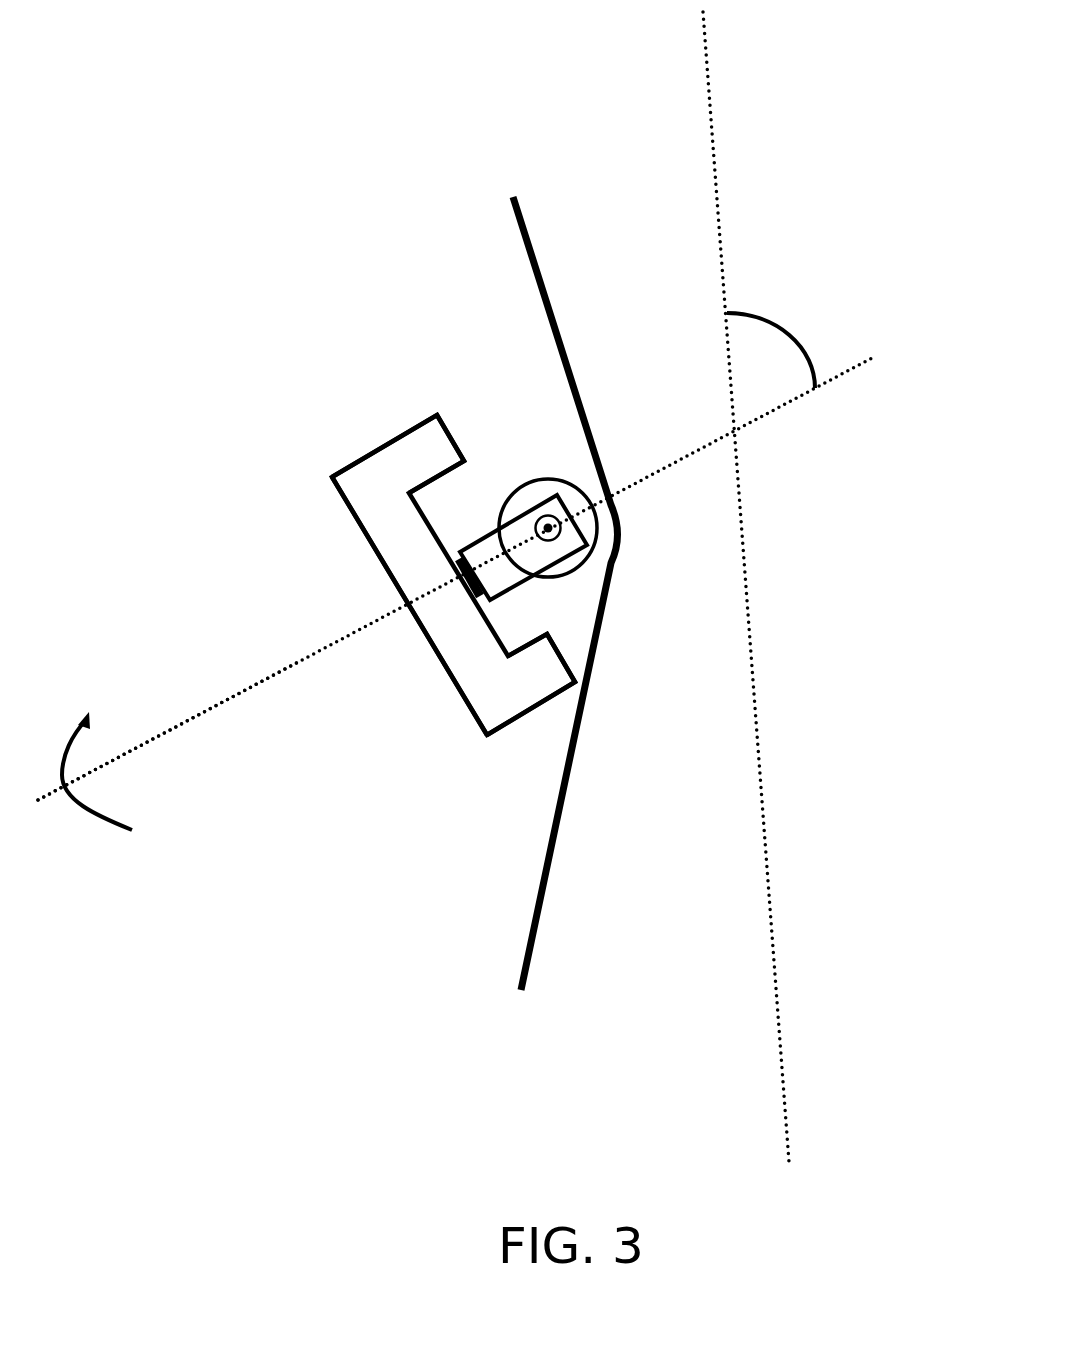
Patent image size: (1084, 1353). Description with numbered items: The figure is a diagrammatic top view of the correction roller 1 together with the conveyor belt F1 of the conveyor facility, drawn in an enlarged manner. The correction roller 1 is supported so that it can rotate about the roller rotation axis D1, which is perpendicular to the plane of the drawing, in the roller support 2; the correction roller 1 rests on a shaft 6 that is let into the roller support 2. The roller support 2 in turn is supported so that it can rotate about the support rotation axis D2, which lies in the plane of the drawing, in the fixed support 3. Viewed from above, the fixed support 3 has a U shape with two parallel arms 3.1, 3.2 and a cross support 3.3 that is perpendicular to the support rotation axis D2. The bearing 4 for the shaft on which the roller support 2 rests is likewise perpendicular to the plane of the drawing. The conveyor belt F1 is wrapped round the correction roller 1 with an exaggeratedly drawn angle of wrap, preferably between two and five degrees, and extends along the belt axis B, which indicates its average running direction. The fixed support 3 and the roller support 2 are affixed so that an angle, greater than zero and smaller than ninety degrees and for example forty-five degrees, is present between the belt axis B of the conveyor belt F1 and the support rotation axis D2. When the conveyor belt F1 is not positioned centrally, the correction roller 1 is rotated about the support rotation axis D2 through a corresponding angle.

The correction roller 1 is at (597, 532).
The roller support 2 is at (522, 578).
The fixed support 3 is at (335, 602).
The arm 3.1 is at (492, 702).
The arm 3.2 is at (390, 463).
The cross support 3.3 is at (423, 642).
The bearing 4 is at (447, 563).
The shaft 6 is at (533, 518).
The roller rotation axis D1 is at (566, 523).
The support rotation axis D2 is at (153, 747).
The conveyor belt F1 is at (548, 888).
The belt axis B is at (775, 890).